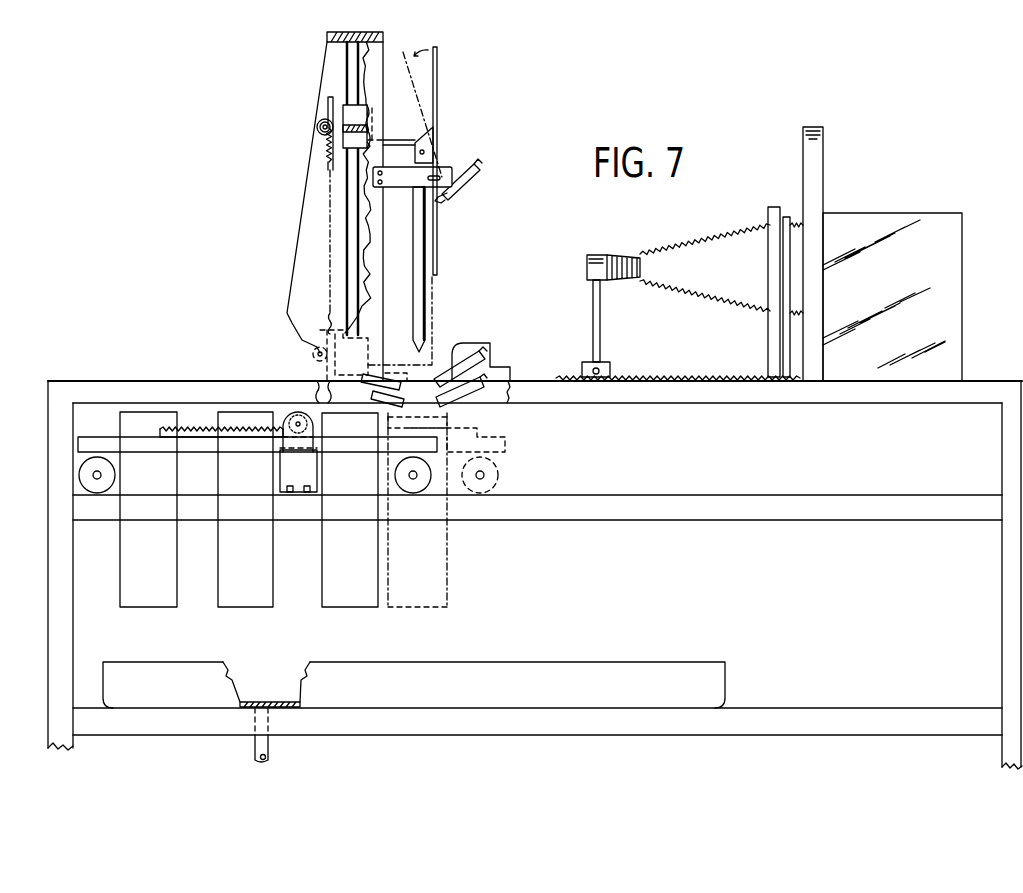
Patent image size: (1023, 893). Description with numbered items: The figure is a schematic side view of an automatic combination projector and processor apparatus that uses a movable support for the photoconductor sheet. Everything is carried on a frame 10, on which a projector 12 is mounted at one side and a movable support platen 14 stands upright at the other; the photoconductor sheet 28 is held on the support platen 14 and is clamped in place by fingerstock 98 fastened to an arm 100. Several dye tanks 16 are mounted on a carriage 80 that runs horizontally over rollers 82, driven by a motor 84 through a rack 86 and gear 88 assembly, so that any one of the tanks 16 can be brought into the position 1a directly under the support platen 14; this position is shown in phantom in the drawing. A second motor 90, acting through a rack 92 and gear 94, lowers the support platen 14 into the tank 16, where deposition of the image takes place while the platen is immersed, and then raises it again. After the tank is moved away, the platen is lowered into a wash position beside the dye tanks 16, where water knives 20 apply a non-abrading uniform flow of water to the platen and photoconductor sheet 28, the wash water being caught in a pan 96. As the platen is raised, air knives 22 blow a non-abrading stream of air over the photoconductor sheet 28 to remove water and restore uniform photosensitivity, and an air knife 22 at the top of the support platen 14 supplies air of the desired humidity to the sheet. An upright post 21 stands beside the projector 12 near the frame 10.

The frame 10 is at (60, 633).
The projector 12 is at (745, 295).
The support platen 14 is at (418, 262).
The dye tanks 16 is at (150, 569).
The position 1a is at (447, 562).
The water knives 20 is at (470, 392).
The post 21 is at (818, 163).
The air knives 22 is at (478, 170).
The photoconductor sheet 28 is at (428, 272).
The carriage 80 is at (102, 447).
The rollers 82 is at (97, 483).
The motor 84 is at (305, 467).
The rack 86 is at (180, 428).
The gear 88 is at (293, 410).
The motor 90 is at (343, 108).
The rack 92 is at (327, 160).
The gear 94 is at (317, 126).
The pan 96 is at (590, 662).
The fingerstock 98 is at (440, 198).
The arm 100 is at (437, 73).